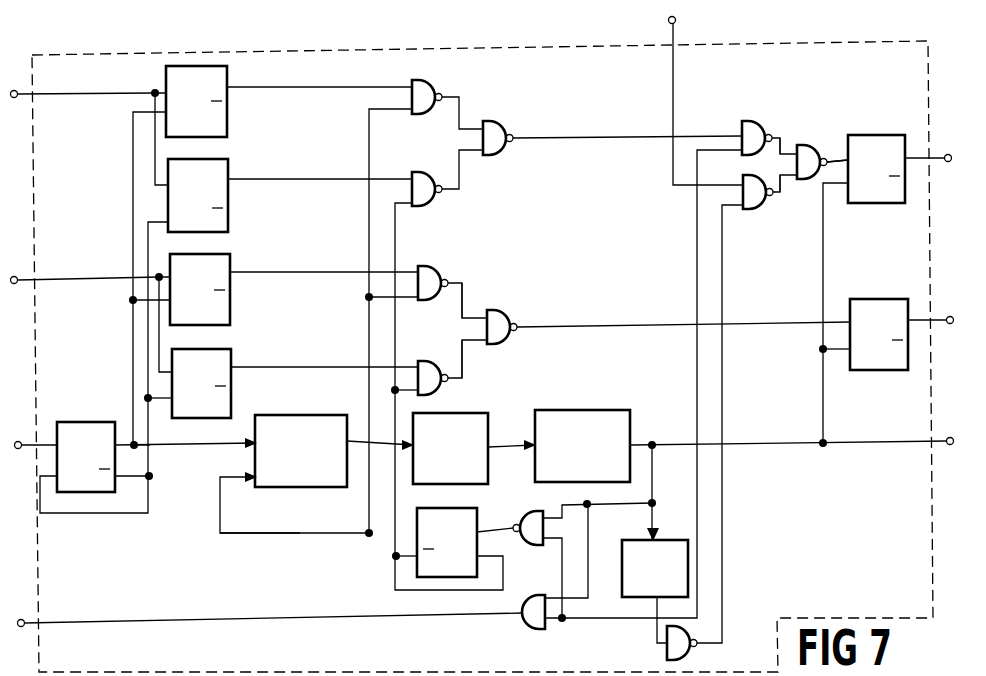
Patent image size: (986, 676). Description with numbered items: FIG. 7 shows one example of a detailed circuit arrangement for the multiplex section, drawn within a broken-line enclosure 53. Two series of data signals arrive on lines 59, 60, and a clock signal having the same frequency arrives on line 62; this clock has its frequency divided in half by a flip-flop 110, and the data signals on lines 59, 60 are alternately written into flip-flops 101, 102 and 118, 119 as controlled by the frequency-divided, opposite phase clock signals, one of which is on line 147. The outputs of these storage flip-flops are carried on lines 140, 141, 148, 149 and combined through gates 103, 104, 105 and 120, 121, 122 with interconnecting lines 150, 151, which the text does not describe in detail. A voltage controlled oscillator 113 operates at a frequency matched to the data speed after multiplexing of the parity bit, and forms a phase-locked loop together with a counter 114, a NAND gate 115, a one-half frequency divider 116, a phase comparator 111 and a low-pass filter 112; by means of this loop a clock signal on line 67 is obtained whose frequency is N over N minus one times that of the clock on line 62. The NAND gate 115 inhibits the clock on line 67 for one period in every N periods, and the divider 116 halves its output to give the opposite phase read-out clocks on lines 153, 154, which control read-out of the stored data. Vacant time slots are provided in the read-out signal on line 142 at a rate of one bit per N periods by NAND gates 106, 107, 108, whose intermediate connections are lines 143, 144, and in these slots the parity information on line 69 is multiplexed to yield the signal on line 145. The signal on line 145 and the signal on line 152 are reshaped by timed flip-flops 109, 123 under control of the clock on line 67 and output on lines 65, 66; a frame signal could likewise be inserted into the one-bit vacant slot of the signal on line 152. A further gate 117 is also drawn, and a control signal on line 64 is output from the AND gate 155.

The phase locked loop circuit enclosure 53 is at (812, 41).
The line 59 is at (102, 92).
The line 60 is at (74, 283).
The line 62 is at (38, 440).
The line 64 is at (85, 620).
The line 65 is at (916, 156).
The line 66 is at (916, 318).
The line 67 is at (896, 438).
The line 69 is at (676, 20).
The flip-flop 101 is at (227, 82).
The flip-flop 102 is at (228, 170).
The NAND gate 103 is at (426, 80).
The NAND gate 104 is at (420, 170).
The NAND gate 105 is at (492, 118).
The NAND gate 106 is at (755, 122).
The NAND gate 107 is at (748, 212).
The NAND gate 108 is at (811, 146).
The timed flip-flop 109 is at (877, 134).
The flip-flop 110 is at (77, 420).
The phase comparator 111 is at (320, 414).
The low-pass filter 112 is at (470, 412).
The voltage controlled oscillator 113 is at (602, 410).
The counter 114 is at (658, 536).
The NAND gate 115 is at (540, 548).
The ½ frequency divider 116 is at (478, 518).
The NAND gate 117 is at (697, 646).
The flip-flop 118 is at (231, 258).
The flip-flop 119 is at (232, 362).
The NAND gate 120 is at (426, 258).
The NAND gate 121 is at (426, 360).
The NAND gate 122 is at (503, 308).
The timed flip-flop 123 is at (867, 298).
The signal line 140 is at (298, 86).
The signal line 141 is at (304, 178).
The line 142 is at (572, 136).
The signal line 143 is at (780, 138).
The signal line 144 is at (778, 194).
The line 145 is at (832, 166).
The line 147 is at (152, 450).
The signal line 148 is at (305, 270).
The signal line 149 is at (310, 366).
The signal line 150 is at (463, 296).
The signal line 151 is at (465, 366).
The line 152 is at (560, 326).
The line 153 is at (288, 538).
The line 154 is at (396, 570).
The AND gate 155 is at (526, 628).